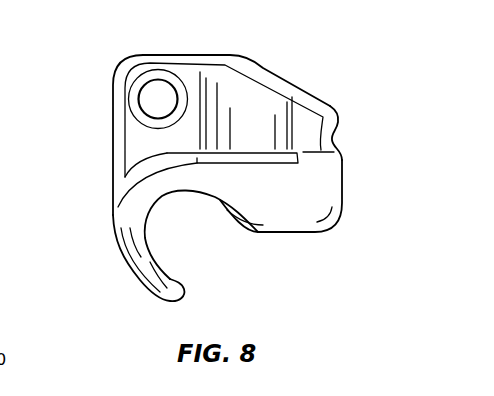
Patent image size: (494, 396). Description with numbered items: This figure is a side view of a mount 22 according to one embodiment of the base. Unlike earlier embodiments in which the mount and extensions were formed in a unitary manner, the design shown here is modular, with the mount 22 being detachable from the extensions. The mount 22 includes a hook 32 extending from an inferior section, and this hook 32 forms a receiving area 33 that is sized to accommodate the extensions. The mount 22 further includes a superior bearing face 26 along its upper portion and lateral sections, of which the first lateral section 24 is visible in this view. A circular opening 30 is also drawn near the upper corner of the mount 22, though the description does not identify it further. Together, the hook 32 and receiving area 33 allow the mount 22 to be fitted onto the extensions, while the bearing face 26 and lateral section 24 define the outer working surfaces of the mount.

The mount 22 is at (95, 178).
The first lateral section 24 is at (265, 102).
The superior bearing face 26 is at (345, 167).
The mounting hole 30 is at (140, 93).
The hook 32 is at (174, 290).
The receiving area 33 is at (188, 245).